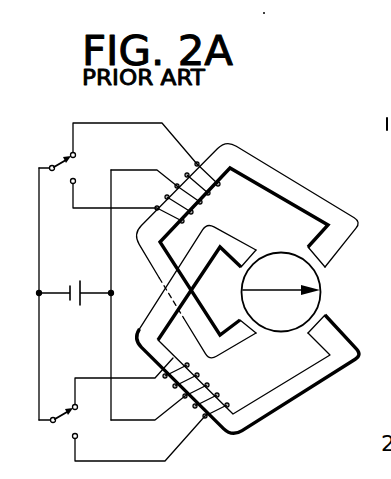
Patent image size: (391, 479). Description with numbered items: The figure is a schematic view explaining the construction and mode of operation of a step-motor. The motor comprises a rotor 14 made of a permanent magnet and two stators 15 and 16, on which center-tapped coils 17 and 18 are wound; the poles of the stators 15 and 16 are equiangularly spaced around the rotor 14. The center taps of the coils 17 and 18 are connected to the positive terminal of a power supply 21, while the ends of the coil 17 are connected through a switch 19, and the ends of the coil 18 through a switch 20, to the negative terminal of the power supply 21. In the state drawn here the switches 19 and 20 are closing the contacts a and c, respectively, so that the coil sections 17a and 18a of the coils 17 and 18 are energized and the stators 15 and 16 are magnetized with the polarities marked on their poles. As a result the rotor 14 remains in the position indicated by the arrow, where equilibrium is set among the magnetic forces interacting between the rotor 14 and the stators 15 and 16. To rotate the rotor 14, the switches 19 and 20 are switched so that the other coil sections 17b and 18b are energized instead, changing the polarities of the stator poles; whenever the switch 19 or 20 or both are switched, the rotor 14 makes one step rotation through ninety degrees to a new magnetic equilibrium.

The rotor 14 is at (321, 290).
The stator 15 is at (310, 190).
The stator 16 is at (283, 407).
The center-tapped coil 17 is at (207, 209).
The coil section 17a is at (197, 172).
The coil section 17b is at (177, 196).
The center-tapped coil 18 is at (223, 383).
The coil section 18a is at (124, 383).
The coil section 18b is at (187, 413).
The switch 19 is at (69, 152).
The switch 20 is at (70, 428).
The power supply 21 is at (78, 283).